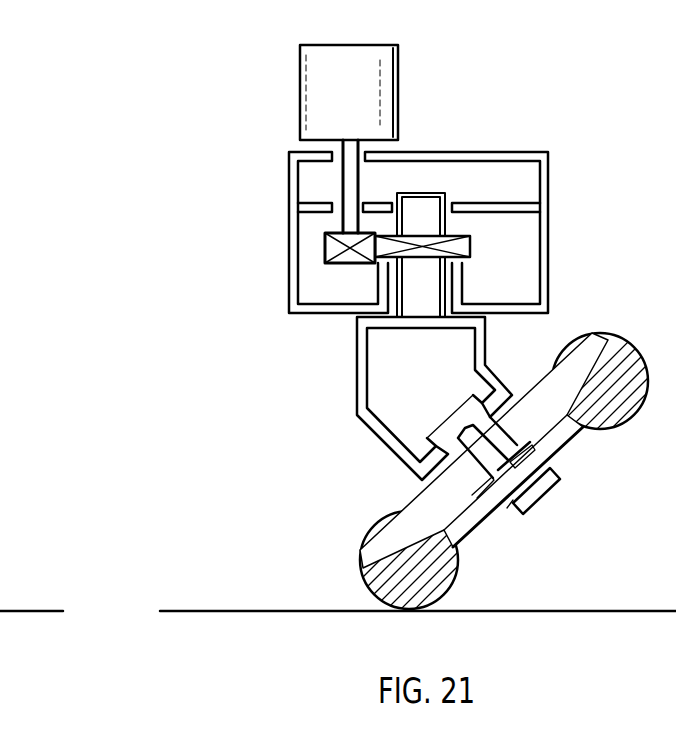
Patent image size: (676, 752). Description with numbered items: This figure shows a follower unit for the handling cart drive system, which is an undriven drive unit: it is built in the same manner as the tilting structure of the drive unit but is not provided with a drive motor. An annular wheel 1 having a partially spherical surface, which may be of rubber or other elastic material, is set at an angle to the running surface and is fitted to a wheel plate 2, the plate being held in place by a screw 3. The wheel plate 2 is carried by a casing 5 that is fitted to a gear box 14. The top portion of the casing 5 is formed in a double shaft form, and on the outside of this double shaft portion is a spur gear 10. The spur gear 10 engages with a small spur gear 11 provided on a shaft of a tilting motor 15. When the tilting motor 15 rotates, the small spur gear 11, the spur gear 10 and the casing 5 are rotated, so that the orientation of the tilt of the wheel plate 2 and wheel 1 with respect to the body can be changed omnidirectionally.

The wheel 1 is at (430, 580).
The wheel plate 2 is at (360, 555).
The screw 3 is at (512, 503).
The casing 5 is at (368, 428).
The spur gear 10 is at (466, 247).
The small spur gear 11 is at (327, 253).
The gear box 14 is at (290, 242).
The tilting motor 15 is at (313, 90).